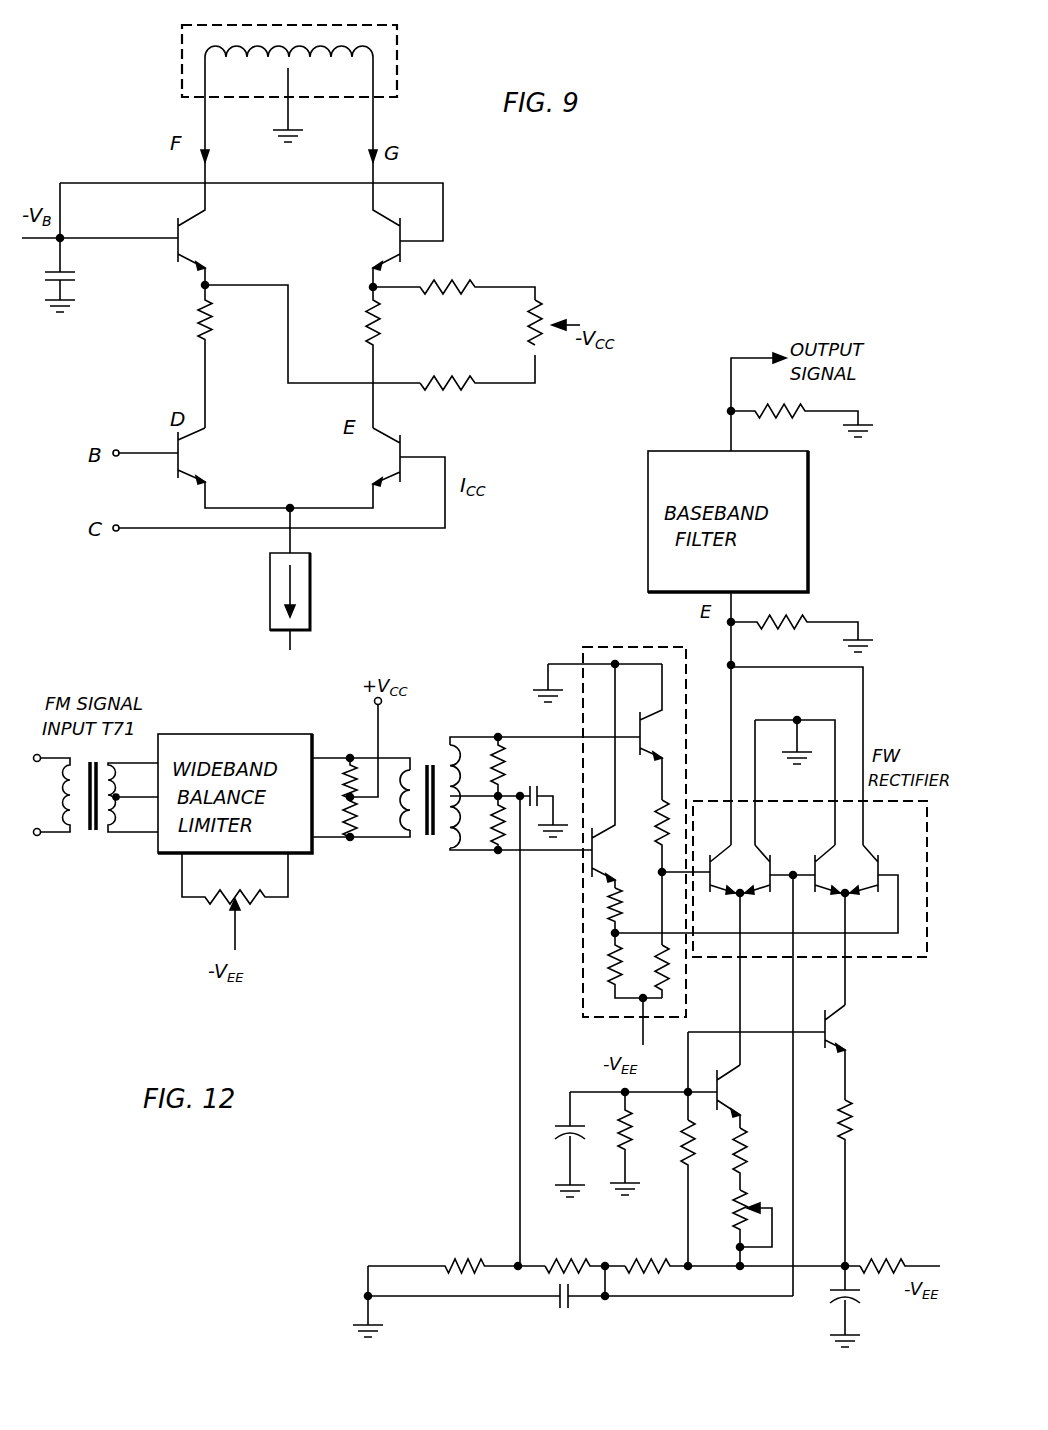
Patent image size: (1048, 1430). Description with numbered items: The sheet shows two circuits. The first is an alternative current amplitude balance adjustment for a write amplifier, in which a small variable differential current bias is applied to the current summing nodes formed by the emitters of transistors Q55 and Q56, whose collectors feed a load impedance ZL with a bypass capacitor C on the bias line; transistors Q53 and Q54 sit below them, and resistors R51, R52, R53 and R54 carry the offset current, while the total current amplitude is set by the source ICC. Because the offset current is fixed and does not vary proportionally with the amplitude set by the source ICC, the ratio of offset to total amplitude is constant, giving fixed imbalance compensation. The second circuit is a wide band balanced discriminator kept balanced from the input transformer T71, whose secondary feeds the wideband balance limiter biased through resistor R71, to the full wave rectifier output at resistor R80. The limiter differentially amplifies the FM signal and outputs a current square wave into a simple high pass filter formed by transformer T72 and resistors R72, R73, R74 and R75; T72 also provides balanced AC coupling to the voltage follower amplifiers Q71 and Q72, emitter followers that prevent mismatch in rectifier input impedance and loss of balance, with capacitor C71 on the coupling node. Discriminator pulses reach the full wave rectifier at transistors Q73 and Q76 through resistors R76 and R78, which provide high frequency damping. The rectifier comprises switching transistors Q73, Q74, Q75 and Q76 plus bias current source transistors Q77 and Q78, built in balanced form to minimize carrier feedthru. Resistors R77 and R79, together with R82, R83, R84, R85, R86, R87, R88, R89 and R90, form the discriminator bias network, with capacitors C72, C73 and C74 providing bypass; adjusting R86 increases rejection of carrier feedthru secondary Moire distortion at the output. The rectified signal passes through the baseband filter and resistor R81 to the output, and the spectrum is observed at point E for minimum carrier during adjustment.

In FIG. 9, the load impedance (inductor) ZL is at (304, 104).
In FIG. 9, the bypass capacitor C is at (70, 290).
In FIG. 9, the transistor Q55 is at (204, 234).
In FIG. 9, the transistor Q56 is at (375, 235).
In FIG. 9, the transistor Q53 is at (201, 468).
In FIG. 9, the transistor Q54 is at (279, 479).
In FIG. 9, the resistor R51 is at (185, 356).
In FIG. 9, the resistor R52 is at (393, 357).
In FIG. 9, the resistor R53 is at (454, 276).
In FIG. 9, the resistor R54 is at (481, 345).
In FIG. 9, the current source ICC is at (301, 590).
In FIG. 12, the input transformer T71 is at (96, 795).
In FIG. 12, the differentiating transformer T72 is at (520, 777).
In FIG. 12, the potentiometer R71 is at (235, 901).
In FIG. 12, the resistor R72 is at (345, 770).
In FIG. 12, the resistor R73 is at (345, 825).
In FIG. 12, the resistor R74 is at (485, 780).
In FIG. 12, the resistor R75 is at (492, 820).
In FIG. 12, the resistor R76 is at (633, 910).
In FIG. 12, the resistor R77 is at (610, 962).
In FIG. 12, the resistor R78 is at (648, 833).
In FIG. 12, the resistor R79 is at (649, 971).
In FIG. 12, the resistor R80 is at (802, 638).
In FIG. 12, the resistor R81 is at (802, 426).
In FIG. 12, the resistor R82 is at (613, 1143).
In FIG. 12, the resistor R83 is at (672, 1189).
In FIG. 12, the resistor R84 is at (725, 1159).
In FIG. 12, the resistor R85 is at (826, 1183).
In FIG. 12, the resistor R86 is at (732, 1228).
In FIG. 12, the resistor R87 is at (456, 1253).
In FIG. 12, the resistor R88 is at (585, 1252).
In FIG. 12, the resistor R89 is at (742, 1252).
In FIG. 12, the resistor R90 is at (900, 1255).
In FIG. 12, the capacitor C71 is at (544, 801).
In FIG. 12, the capacitor C72 is at (554, 1144).
In FIG. 12, the capacitor C73 is at (580, 1310).
In FIG. 12, the capacitor C74 is at (859, 1306).
In FIG. 12, the voltage follower amplifier Q71 is at (614, 776).
In FIG. 12, the voltage follower amplifier Q72 is at (661, 732).
In FIG. 12, the switching transistor Q73 is at (717, 860).
In FIG. 12, the switching transistor Q74 is at (777, 860).
In FIG. 12, the switching transistor Q75 is at (821, 860).
In FIG. 12, the switching transistor Q76 is at (876, 860).
In FIG. 12, the bias current source transistor Q77 is at (727, 1096).
In FIG. 12, the bias current source transistor Q78 is at (782, 1052).